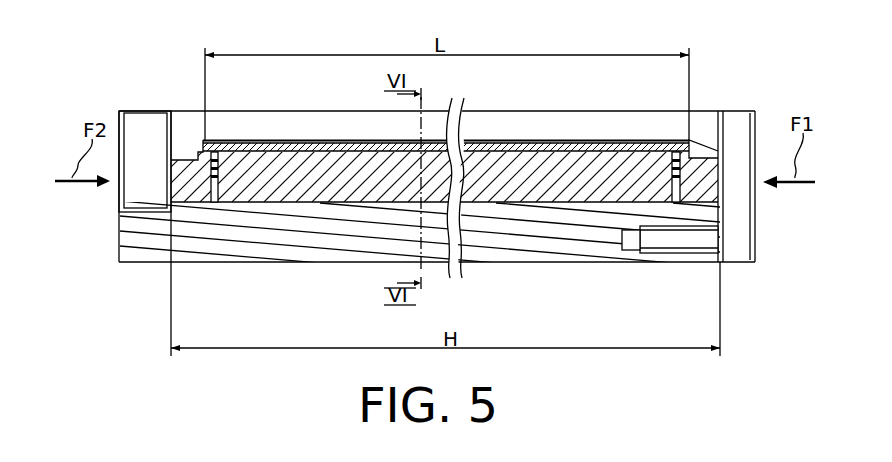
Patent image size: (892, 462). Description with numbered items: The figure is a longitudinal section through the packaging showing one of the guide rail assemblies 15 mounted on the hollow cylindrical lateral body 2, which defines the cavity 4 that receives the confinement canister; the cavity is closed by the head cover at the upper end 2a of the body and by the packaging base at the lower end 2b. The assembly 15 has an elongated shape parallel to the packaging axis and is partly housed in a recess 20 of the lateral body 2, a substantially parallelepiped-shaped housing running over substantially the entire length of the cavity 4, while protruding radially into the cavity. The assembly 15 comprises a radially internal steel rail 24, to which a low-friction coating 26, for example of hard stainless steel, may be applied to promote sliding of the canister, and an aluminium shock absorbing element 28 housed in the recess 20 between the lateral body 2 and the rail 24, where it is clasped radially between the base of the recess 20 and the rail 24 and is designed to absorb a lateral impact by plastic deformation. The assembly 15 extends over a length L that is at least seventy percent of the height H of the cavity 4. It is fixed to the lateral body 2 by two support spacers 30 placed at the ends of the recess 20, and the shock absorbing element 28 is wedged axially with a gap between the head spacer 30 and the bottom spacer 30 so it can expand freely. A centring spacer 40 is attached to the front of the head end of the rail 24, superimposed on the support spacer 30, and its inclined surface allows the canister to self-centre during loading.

The lateral body 2 is at (357, 268).
The upper end 2a is at (688, 255).
The lower end 2b is at (162, 243).
The cavity 4 is at (222, 122).
The assembly 15 is at (251, 131).
The recess 20 is at (313, 187).
The rail 24 is at (570, 142).
The low-friction coating 26 is at (543, 140).
The shock absorbing element 28 is at (505, 167).
The support spacer 30 is at (718, 172).
The centring spacer 40 is at (703, 150).